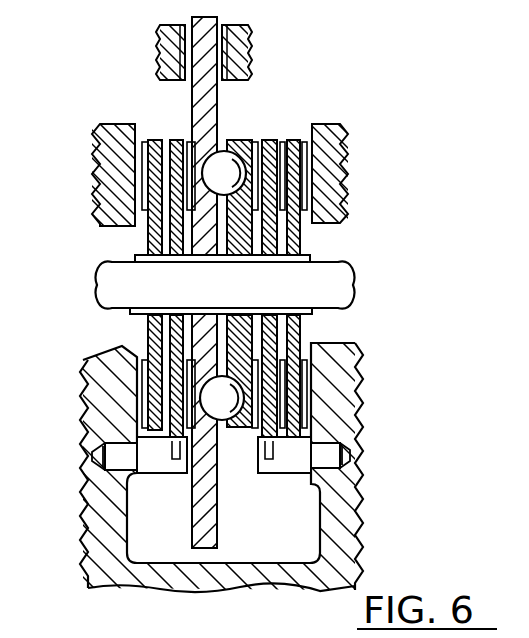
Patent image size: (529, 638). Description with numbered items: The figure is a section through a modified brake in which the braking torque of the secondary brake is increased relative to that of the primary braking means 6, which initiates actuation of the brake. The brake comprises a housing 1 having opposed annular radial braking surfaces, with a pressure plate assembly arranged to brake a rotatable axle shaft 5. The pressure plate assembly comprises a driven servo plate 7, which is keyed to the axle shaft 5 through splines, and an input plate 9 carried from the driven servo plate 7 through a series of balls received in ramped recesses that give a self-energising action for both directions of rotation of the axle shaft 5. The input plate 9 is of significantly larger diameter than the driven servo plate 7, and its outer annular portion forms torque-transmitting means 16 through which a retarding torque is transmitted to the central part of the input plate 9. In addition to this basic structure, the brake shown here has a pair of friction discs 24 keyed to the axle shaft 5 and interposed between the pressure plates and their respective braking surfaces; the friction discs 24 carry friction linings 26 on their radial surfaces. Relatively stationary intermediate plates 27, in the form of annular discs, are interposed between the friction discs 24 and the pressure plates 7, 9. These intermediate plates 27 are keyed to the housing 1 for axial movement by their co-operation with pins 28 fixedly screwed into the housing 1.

The housing 1 is at (337, 530).
The axle shaft 5 is at (122, 270).
The primary braking means 6 is at (270, 50).
The driven servo plate 7 is at (240, 152).
The input plate 9 is at (192, 93).
The torque-transmitting means 16 is at (220, 533).
The friction discs 24 is at (305, 243).
The friction linings 26 is at (100, 136).
The intermediate plates 27 is at (172, 212).
The pins 28 is at (160, 463).